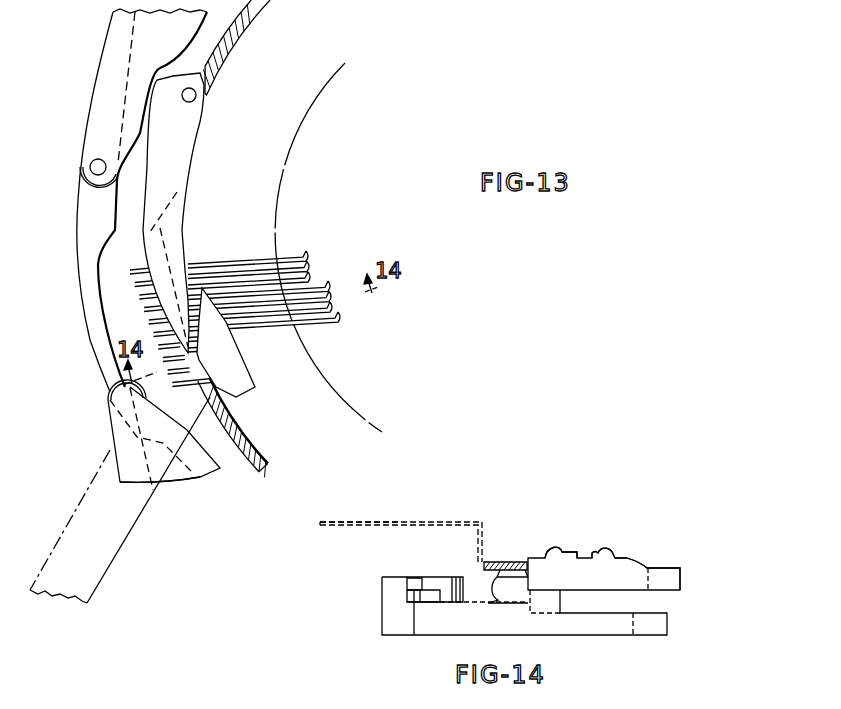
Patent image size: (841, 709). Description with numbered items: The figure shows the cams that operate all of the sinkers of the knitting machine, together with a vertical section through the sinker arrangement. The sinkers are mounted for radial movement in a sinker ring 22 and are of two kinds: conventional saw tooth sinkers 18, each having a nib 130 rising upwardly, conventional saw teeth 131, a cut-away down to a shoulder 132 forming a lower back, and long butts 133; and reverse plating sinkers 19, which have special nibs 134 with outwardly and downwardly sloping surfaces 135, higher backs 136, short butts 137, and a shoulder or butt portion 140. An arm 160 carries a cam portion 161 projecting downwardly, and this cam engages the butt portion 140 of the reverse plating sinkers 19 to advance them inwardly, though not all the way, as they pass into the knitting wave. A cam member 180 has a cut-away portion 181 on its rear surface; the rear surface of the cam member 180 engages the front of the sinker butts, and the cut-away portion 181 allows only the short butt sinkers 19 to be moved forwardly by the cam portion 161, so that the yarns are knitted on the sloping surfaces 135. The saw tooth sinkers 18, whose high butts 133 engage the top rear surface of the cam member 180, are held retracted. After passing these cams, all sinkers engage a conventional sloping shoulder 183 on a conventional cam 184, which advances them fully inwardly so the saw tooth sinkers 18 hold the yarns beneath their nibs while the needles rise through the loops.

In FIG. 13, the sinker ring 22 is at (111, 44).
In FIG. 13, the saw tooth sinkers 18 is at (305, 258).
In FIG. 14, the saw tooth sinkers 18 is at (627, 557).
In FIG. 13, the reverse plating sinkers 19 is at (325, 290).
In FIG. 14, the reverse plating sinkers 19 is at (680, 568).
In FIG. 13, the cam portion 161 is at (253, 390).
In FIG. 14, the cam portion 161 is at (512, 560).
In FIG. 13, the cam member 180 is at (183, 193).
In FIG. 14, the cam member 180 is at (433, 577).
In FIG. 13, the cut-away portion 181 is at (169, 265).
In FIG. 14, the cut-away portion 181 is at (420, 590).
In FIG. 13, the sloping shoulder 183 is at (162, 413).
In FIG. 13, the cam 184 is at (202, 475).
In FIG. 13, the arm 160 is at (142, 517).
In FIG. 14, the arm 160 is at (337, 523).
In FIG. 14, the long butts 133 is at (388, 581).
In FIG. 14, the short butts 137 is at (420, 594).
In FIG. 14, the butt portion 140 is at (530, 580).
In FIG. 14, the nib 130 is at (558, 545).
In FIG. 14, the higher backs 136 is at (572, 552).
In FIG. 14, the outwardly and downwardly sloping surfaces 135 is at (595, 550).
In FIG. 14, the special nibs 134 is at (620, 533).
In FIG. 14, the saw teeth 131 is at (632, 566).
In FIG. 14, the shoulder 132 is at (522, 563).